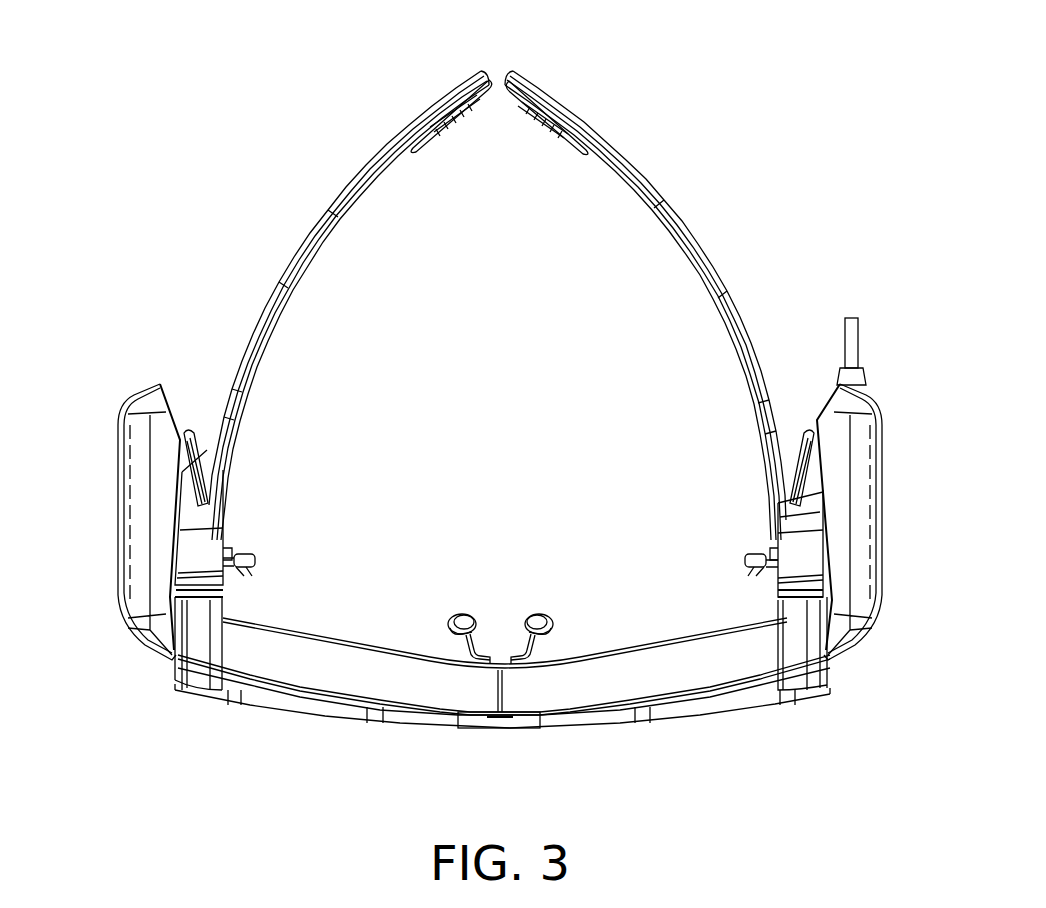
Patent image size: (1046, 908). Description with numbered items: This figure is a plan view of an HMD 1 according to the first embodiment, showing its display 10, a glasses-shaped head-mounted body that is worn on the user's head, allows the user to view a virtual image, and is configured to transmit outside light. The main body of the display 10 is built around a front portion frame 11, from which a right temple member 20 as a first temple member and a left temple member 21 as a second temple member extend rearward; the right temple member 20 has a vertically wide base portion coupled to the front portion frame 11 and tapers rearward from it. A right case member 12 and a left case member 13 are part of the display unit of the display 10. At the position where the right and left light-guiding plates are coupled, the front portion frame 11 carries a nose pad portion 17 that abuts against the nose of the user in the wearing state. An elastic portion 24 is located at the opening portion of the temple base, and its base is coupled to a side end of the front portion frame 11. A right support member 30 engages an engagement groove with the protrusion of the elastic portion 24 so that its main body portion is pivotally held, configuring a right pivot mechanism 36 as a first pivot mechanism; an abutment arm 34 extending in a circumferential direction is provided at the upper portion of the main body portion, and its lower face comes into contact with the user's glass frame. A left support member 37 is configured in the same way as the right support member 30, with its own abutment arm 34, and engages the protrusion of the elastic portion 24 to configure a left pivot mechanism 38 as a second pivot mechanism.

The HMD 1 is at (632, 98).
The display 10 is at (620, 634).
The front portion frame 11 is at (357, 718).
The right case member 12 is at (128, 535).
The left case member 13 is at (873, 535).
The nose pad portion 17 is at (530, 608).
The right temple member 20 is at (340, 197).
The left temple member 21 is at (658, 197).
The elastic portion 24 is at (190, 428).
The right support member 30 is at (256, 578).
The abutment arm 34 is at (252, 554).
The right pivot mechanism 36 is at (239, 548).
The left support member 37 is at (746, 578).
The left pivot mechanism 38 is at (768, 546).